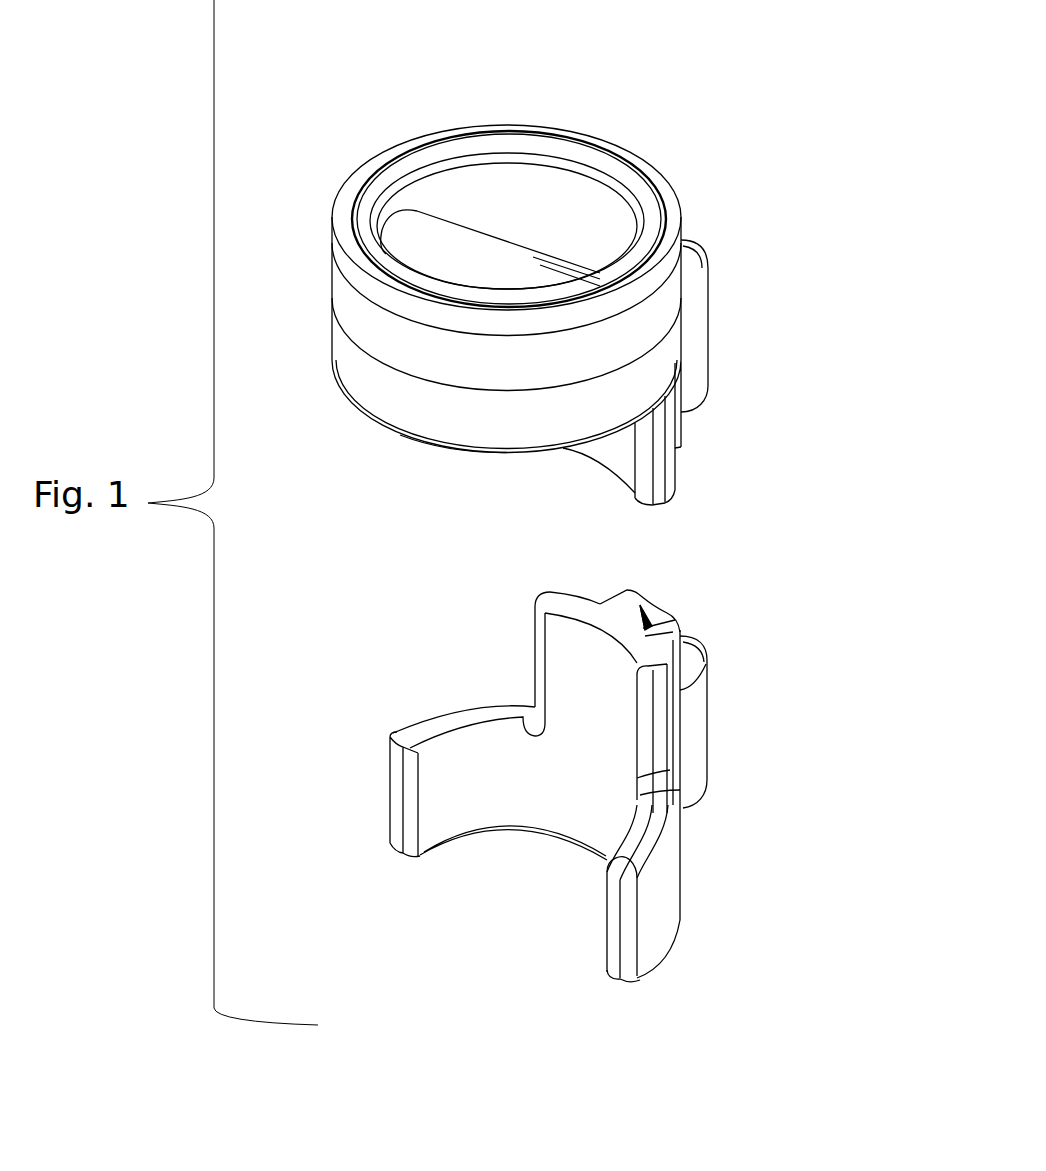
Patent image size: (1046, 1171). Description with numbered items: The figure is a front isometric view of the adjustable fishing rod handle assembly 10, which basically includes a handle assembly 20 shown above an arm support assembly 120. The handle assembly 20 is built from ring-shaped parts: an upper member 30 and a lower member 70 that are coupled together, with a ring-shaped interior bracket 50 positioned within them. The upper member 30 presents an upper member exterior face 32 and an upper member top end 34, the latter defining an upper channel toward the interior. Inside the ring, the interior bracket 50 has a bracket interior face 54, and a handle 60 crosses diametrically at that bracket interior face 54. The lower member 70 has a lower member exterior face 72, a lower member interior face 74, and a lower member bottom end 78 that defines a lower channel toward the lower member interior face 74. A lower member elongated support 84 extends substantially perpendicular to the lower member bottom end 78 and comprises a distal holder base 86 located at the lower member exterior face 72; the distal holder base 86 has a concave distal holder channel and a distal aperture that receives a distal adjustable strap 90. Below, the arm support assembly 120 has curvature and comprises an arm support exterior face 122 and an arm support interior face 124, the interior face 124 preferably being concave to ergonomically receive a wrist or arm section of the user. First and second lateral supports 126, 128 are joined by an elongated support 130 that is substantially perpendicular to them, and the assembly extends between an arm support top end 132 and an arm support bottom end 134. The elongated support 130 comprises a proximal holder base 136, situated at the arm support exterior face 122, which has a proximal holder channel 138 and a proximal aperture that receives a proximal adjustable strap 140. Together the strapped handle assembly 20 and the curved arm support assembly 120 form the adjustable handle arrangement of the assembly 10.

The adjustable fishing rod handle assembly 10 is at (559, 523).
The handle assembly 20 is at (544, 288).
The upper member 30 is at (294, 166).
The upper member exterior face 32 is at (345, 302).
The upper member top end 34 is at (600, 143).
The interior bracket 50 is at (532, 181).
The bracket interior face 54 is at (575, 225).
The handle 60 is at (418, 237).
The lower member 70 is at (540, 441).
The lower member exterior face 72 is at (345, 362).
The lower member interior face 74 is at (635, 460).
The lower member bottom end 78 is at (445, 452).
The lower member elongated support 84 is at (663, 488).
The distal holder base 86 is at (688, 437).
The distal adjustable strap 90 is at (720, 313).
The arm support assembly 120 is at (559, 770).
The arm support exterior face 122 is at (671, 903).
The arm support interior face 124 is at (419, 738).
The first lateral support 126 is at (383, 795).
The second lateral support 128 is at (622, 948).
The elongated support 130 is at (676, 729).
The arm support top end 132 is at (598, 595).
The arm support bottom end 134 is at (672, 948).
The proximal holder base 136 is at (697, 642).
The proximal holder channel 138 is at (642, 603).
The proximal adjustable strap 140 is at (708, 727).